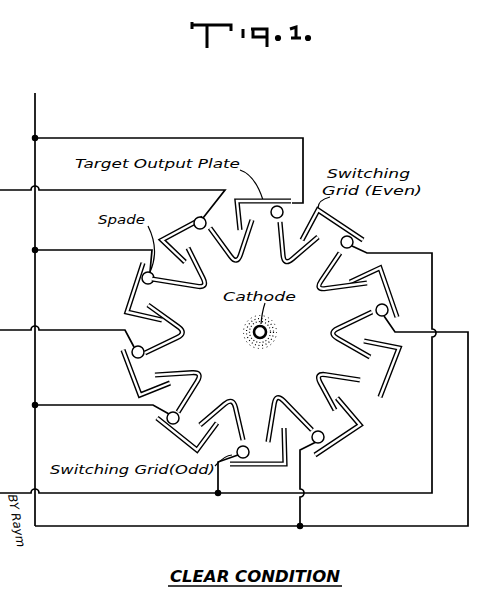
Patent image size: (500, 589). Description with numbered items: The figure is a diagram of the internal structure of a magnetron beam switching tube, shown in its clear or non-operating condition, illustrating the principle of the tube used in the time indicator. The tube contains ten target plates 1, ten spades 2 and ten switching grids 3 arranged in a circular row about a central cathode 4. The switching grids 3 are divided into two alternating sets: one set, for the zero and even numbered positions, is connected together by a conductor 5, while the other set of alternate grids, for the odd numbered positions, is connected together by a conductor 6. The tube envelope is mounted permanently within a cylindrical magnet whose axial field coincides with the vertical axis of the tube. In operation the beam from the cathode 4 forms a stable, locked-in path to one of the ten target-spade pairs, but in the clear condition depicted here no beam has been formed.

The target plate 1 is at (283, 200).
The spade 2 is at (202, 296).
The switching grid 3 is at (203, 418).
The cathode 4 is at (259, 341).
The conductor 5 is at (66, 138).
The conductor 6 is at (73, 190).